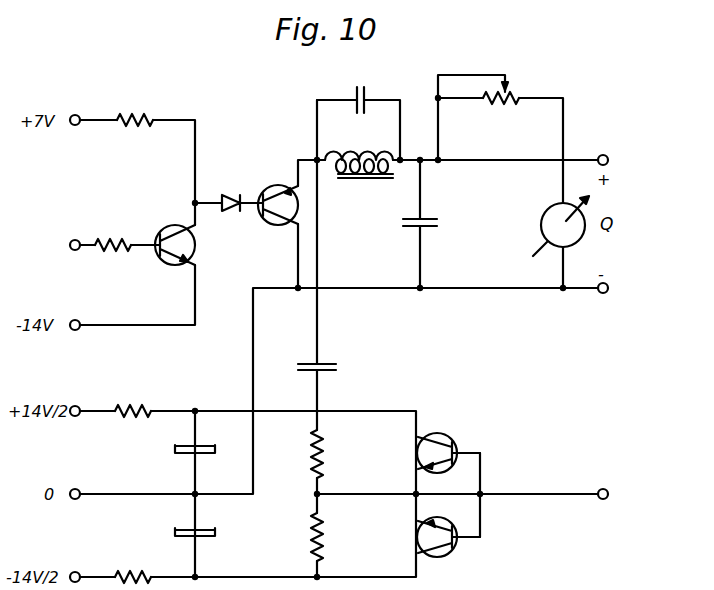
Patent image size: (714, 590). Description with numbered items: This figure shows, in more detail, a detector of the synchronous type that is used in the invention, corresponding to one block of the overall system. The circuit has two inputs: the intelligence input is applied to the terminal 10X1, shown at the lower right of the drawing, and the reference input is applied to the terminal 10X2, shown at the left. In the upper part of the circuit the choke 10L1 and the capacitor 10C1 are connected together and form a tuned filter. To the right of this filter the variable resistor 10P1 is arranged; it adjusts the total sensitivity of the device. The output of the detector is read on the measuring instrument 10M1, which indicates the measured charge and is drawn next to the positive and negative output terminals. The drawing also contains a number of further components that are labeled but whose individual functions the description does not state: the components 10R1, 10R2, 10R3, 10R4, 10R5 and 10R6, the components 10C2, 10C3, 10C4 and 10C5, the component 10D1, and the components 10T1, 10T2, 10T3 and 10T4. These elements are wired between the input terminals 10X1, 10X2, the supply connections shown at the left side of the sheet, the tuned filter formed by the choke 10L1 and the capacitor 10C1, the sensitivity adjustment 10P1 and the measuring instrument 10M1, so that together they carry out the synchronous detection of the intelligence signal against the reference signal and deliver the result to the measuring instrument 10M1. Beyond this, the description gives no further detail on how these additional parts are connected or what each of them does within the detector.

The resistor 10R1 is at (133, 237).
The resistor 10R2 is at (157, 112).
The resistor 10R3 is at (157, 403).
The resistor 10R4 is at (133, 568).
The resistor 10R5 is at (310, 541).
The resistor 10R6 is at (310, 457).
The capacitor 10C1 is at (372, 82).
The capacitor 10C2 is at (444, 222).
The capacitor 10C3 is at (172, 446).
The capacitor 10C4 is at (165, 534).
The capacitor 10C5 is at (346, 364).
The diode 10D1 is at (236, 193).
The transistor 10T1 is at (193, 245).
The transistor 10T2 is at (268, 182).
The transistor 10T3 is at (416, 456).
The transistor 10T4 is at (418, 540).
The choke 10L1 is at (372, 158).
The variable resistor 10P1 is at (520, 94).
The measuring instrument 10M1 is at (561, 226).
The terminal 10X1 is at (618, 498).
The terminal 10X2 is at (41, 237).